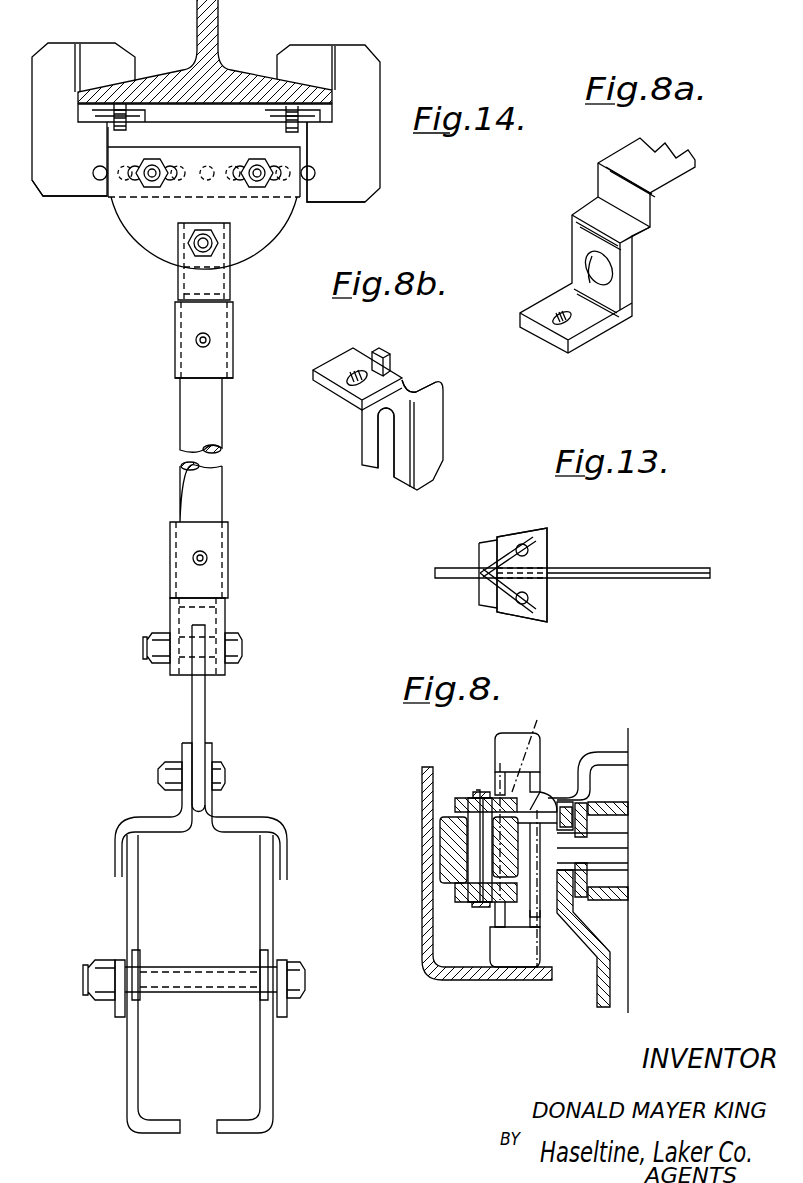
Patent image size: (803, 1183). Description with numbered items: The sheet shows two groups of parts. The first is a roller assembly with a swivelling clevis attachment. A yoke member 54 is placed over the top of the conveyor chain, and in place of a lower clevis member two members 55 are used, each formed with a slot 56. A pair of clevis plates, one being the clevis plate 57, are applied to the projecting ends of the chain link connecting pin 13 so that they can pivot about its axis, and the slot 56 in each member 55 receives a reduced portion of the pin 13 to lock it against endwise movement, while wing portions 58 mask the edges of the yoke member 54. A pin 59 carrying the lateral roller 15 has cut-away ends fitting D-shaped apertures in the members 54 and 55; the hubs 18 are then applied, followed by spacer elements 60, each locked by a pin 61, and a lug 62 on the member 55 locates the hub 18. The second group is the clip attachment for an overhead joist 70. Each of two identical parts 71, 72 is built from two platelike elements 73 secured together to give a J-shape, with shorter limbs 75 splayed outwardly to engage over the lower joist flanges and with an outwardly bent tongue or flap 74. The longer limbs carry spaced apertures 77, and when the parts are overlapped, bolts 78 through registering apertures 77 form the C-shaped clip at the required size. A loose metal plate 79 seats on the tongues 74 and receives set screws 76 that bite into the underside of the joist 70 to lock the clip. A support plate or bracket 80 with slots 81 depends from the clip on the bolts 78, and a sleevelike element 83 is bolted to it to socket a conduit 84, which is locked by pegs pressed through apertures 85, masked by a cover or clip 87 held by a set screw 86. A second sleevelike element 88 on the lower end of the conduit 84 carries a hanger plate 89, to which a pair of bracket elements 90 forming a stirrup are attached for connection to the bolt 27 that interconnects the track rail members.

In FIG. 14, the overhead joist 70 is at (218, 32).
In FIG. 14, the shorter limbs 75 is at (105, 48).
In FIG. 13, the shorter limbs 75 is at (492, 560).
In FIG. 14, the tongue or flap 74 is at (78, 116).
In FIG. 13, the tongue or flap 74 is at (541, 528).
In FIG. 14, the loose metal plate 79 is at (138, 108).
In FIG. 13, the loose metal plate 79 is at (540, 548).
In FIG. 14, the set screw 76 is at (103, 128).
In FIG. 14, the slots or apertures 81 is at (228, 170).
In FIG. 14, the apertures 77 is at (100, 182).
In FIG. 14, the bolts 78 is at (253, 157).
In FIG. 14, the clip attachment part 72 is at (78, 198).
In FIG. 13, the clip attachment part 72 is at (596, 560).
In FIG. 14, the clip attachment part 71 is at (315, 208).
In FIG. 14, the support plate or bracket 80 is at (148, 240).
In FIG. 14, the tubular or sleevelike element 83 is at (177, 283).
In FIG. 14, the apertures 85 is at (175, 340).
In FIG. 14, the set screw 86 is at (200, 343).
In FIG. 14, the sheet metal cover or clip 87 is at (232, 376).
In FIG. 14, the conduit 84 is at (222, 410).
In FIG. 14, the second sleevelike element 88 is at (234, 608).
In FIG. 14, the hanger element or plate 89 is at (217, 718).
In FIG. 14, the bracket elements 90 is at (267, 820).
In FIG. 14, the bolt 27 is at (300, 978).
In FIG. 8A, the yoke member 54 is at (663, 190).
In FIG. 8, the yoke member 54 is at (600, 750).
In FIG. 8B, the lug 62 is at (374, 350).
In FIG. 8B, the member 55 is at (403, 373).
In FIG. 8, the member 55 is at (540, 790).
In FIG. 8B, the wing portions 58 is at (443, 420).
In FIG. 8B, the slot 56 is at (388, 458).
In FIG. 13, the platelike elements 73 is at (673, 568).
In FIG. 8, the hub 18 is at (520, 835).
In FIG. 8, the pin 61 is at (477, 790).
In FIG. 8, the lateral roller 15 is at (440, 843).
In FIG. 8, the chain link connecting pin 13 is at (615, 830).
In FIG. 8, the pin 59 is at (468, 900).
In FIG. 8, the spacer element 60 is at (486, 907).
In FIG. 8, the clevis plate 57 is at (586, 950).